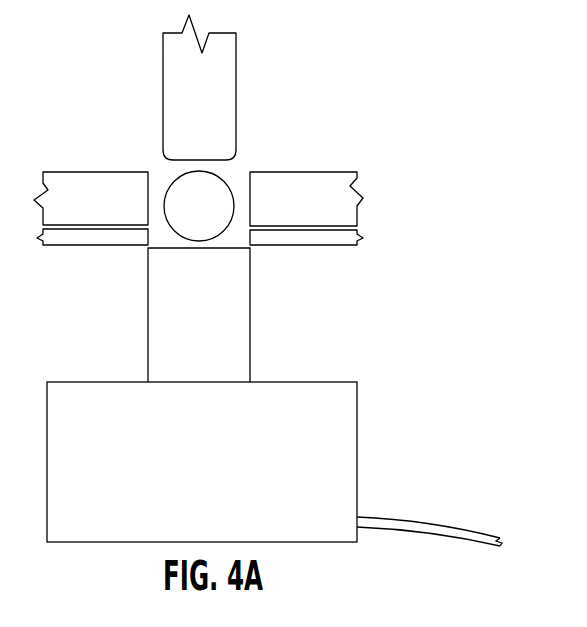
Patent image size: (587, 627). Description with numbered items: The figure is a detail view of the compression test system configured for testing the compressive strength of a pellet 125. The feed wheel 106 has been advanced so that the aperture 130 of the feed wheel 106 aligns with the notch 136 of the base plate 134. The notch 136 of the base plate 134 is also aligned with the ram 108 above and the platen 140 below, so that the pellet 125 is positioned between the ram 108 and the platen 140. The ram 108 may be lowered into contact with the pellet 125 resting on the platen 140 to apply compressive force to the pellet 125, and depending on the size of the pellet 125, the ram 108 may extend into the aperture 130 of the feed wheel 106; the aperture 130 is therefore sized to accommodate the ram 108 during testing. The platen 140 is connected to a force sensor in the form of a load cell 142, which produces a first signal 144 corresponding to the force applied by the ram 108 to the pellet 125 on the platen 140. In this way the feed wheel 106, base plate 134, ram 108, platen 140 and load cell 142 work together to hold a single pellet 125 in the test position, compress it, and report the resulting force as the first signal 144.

The feed wheel 106 is at (313, 192).
The ram 108 is at (208, 90).
The pellet 125 is at (216, 217).
The aperture 130 is at (242, 176).
The base plate 134 is at (323, 232).
The notch 136 is at (144, 247).
The platen 140 is at (223, 333).
The load cell 142 is at (210, 474).
The first signal 144 is at (415, 524).